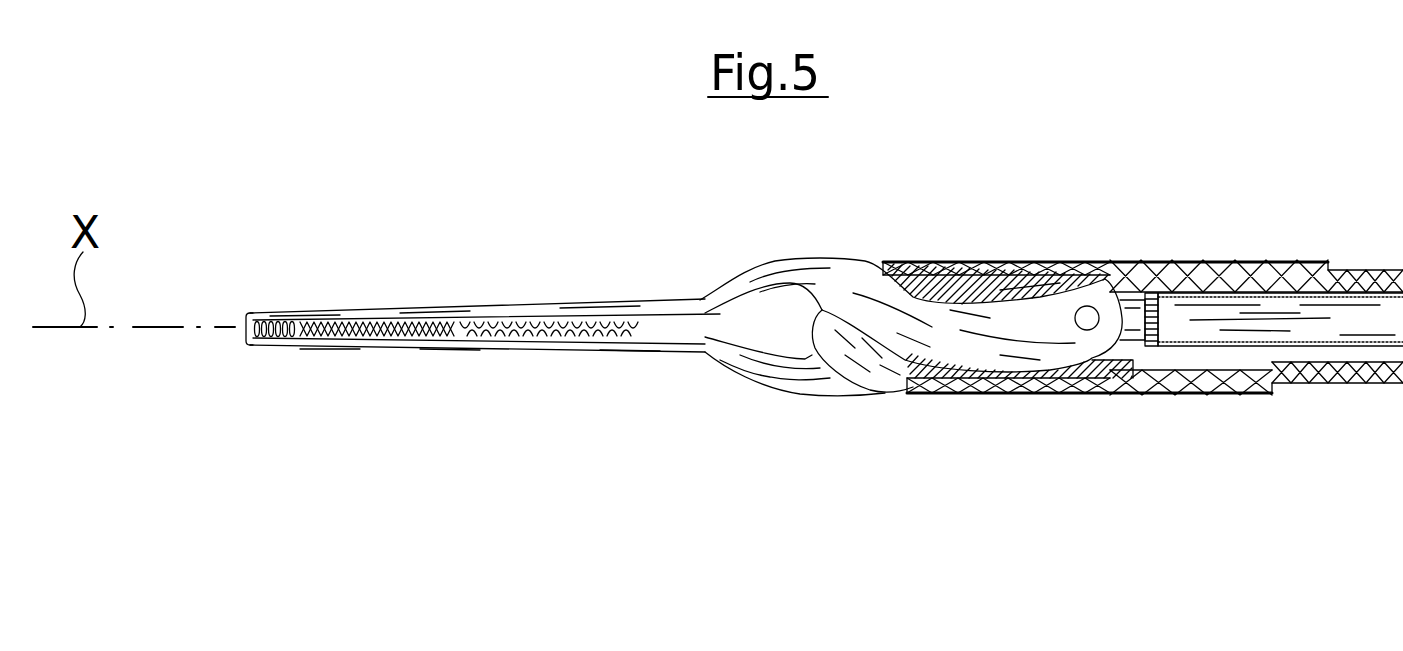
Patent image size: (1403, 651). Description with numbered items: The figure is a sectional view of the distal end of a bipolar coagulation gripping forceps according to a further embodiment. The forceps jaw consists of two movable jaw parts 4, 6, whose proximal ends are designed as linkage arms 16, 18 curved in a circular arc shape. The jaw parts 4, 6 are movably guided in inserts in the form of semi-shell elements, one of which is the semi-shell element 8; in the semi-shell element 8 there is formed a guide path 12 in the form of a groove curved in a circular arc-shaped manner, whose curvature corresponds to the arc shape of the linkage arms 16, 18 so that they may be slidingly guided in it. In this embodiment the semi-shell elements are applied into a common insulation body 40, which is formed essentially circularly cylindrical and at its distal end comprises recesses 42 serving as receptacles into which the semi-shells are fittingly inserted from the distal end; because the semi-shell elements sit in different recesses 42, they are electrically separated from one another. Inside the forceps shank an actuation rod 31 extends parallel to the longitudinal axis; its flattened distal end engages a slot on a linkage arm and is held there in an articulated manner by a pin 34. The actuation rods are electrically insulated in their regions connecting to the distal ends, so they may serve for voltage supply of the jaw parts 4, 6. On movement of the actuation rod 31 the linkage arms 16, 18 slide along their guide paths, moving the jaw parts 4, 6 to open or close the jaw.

The jaw part 4 is at (520, 305).
The jaw part 6 is at (457, 350).
The semi-shell element 8 is at (1090, 330).
The guide path 12 is at (917, 395).
The linkage arm 16 is at (968, 327).
The linkage arm 18 is at (800, 397).
The actuation rod 31 is at (1308, 333).
The pin 34 is at (1107, 393).
The insulation body 40 is at (1218, 260).
The recess 42 is at (957, 397).